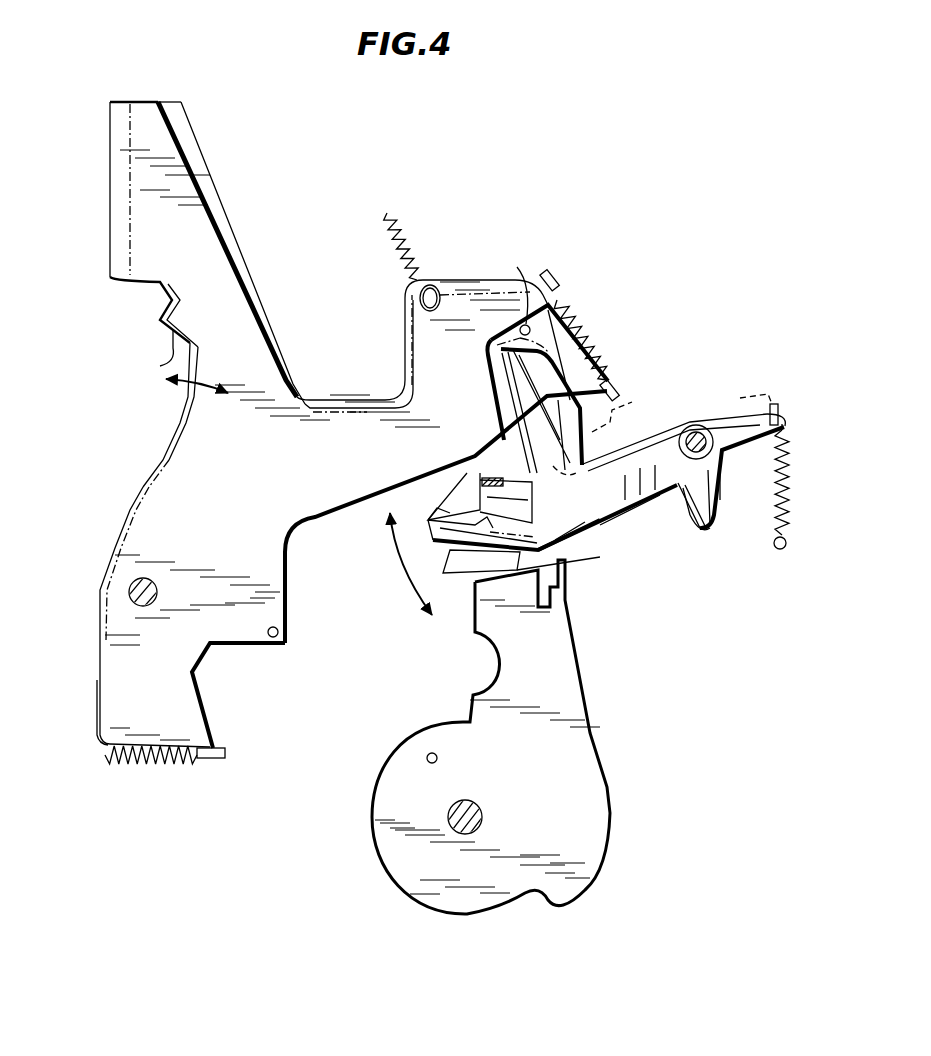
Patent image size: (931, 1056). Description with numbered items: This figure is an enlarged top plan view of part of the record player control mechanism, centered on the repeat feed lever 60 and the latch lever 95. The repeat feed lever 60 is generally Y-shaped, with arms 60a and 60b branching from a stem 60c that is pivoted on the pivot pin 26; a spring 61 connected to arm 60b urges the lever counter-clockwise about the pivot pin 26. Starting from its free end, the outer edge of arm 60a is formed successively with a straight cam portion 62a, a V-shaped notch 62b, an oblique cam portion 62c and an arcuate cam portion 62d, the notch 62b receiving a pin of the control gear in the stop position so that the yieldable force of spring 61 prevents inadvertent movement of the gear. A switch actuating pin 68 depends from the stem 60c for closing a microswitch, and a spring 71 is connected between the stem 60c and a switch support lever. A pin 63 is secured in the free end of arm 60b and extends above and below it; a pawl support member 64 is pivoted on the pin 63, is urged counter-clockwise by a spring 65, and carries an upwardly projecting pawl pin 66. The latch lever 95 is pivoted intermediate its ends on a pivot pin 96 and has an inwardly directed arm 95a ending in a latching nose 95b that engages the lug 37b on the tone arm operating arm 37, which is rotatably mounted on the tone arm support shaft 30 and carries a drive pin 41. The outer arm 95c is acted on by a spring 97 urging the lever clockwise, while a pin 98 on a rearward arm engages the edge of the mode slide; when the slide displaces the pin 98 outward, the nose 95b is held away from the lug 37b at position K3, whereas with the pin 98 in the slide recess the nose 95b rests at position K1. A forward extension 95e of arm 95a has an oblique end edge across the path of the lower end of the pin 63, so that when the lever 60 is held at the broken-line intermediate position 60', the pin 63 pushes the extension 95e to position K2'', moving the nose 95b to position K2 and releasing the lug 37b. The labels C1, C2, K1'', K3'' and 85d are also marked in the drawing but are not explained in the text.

The repeat feed lever 60 is at (399, 514).
The arm of repeat feed lever 60a is at (185, 188).
The intermediate position of repeat feed lever 60' is at (260, 253).
The arm of repeat feed lever 60b is at (457, 313).
The stem of repeat feed lever 60c is at (167, 515).
The straight cam portion 62a is at (110, 232).
The V-shaped notch 62b is at (160, 300).
The oblique cam portion 62c is at (160, 366).
The arcuate cam portion 62d is at (183, 424).
The pivot pin 26 is at (130, 591).
The switch actuating pin 68 is at (275, 638).
The spring 71 is at (155, 765).
The spring 61 is at (396, 220).
The pin 63 is at (529, 283).
The center point C1 is at (538, 332).
The center point C2 is at (540, 351).
The cam position K1'' is at (492, 337).
The displaced position of extension K2'' is at (472, 360).
The cam position K3'' is at (472, 384).
The spring 65 is at (580, 335).
The pawl support member 64 is at (612, 367).
The pawl pin 66 is at (566, 478).
The extension of latch lever arm 95e is at (606, 394).
The latch lever 95 is at (637, 476).
The inwardly directed arm of latch lever 95a is at (573, 518).
The latching nose 95b is at (447, 513).
The outer arm of latch lever 95c is at (755, 414).
The pivot pin 96 is at (696, 432).
The spring 97 is at (792, 472).
The hook portion 85d is at (700, 492).
The pin 98 is at (706, 530).
The tone arm operating arm 37 is at (590, 743).
The lug 37b is at (483, 480).
The latching position of nose K1 is at (480, 498).
The releasing position of nose K2 is at (514, 533).
The withdrawn position of nose K3 is at (521, 561).
The drive pin 41 is at (429, 754).
The tone arm support shaft 30 is at (485, 818).